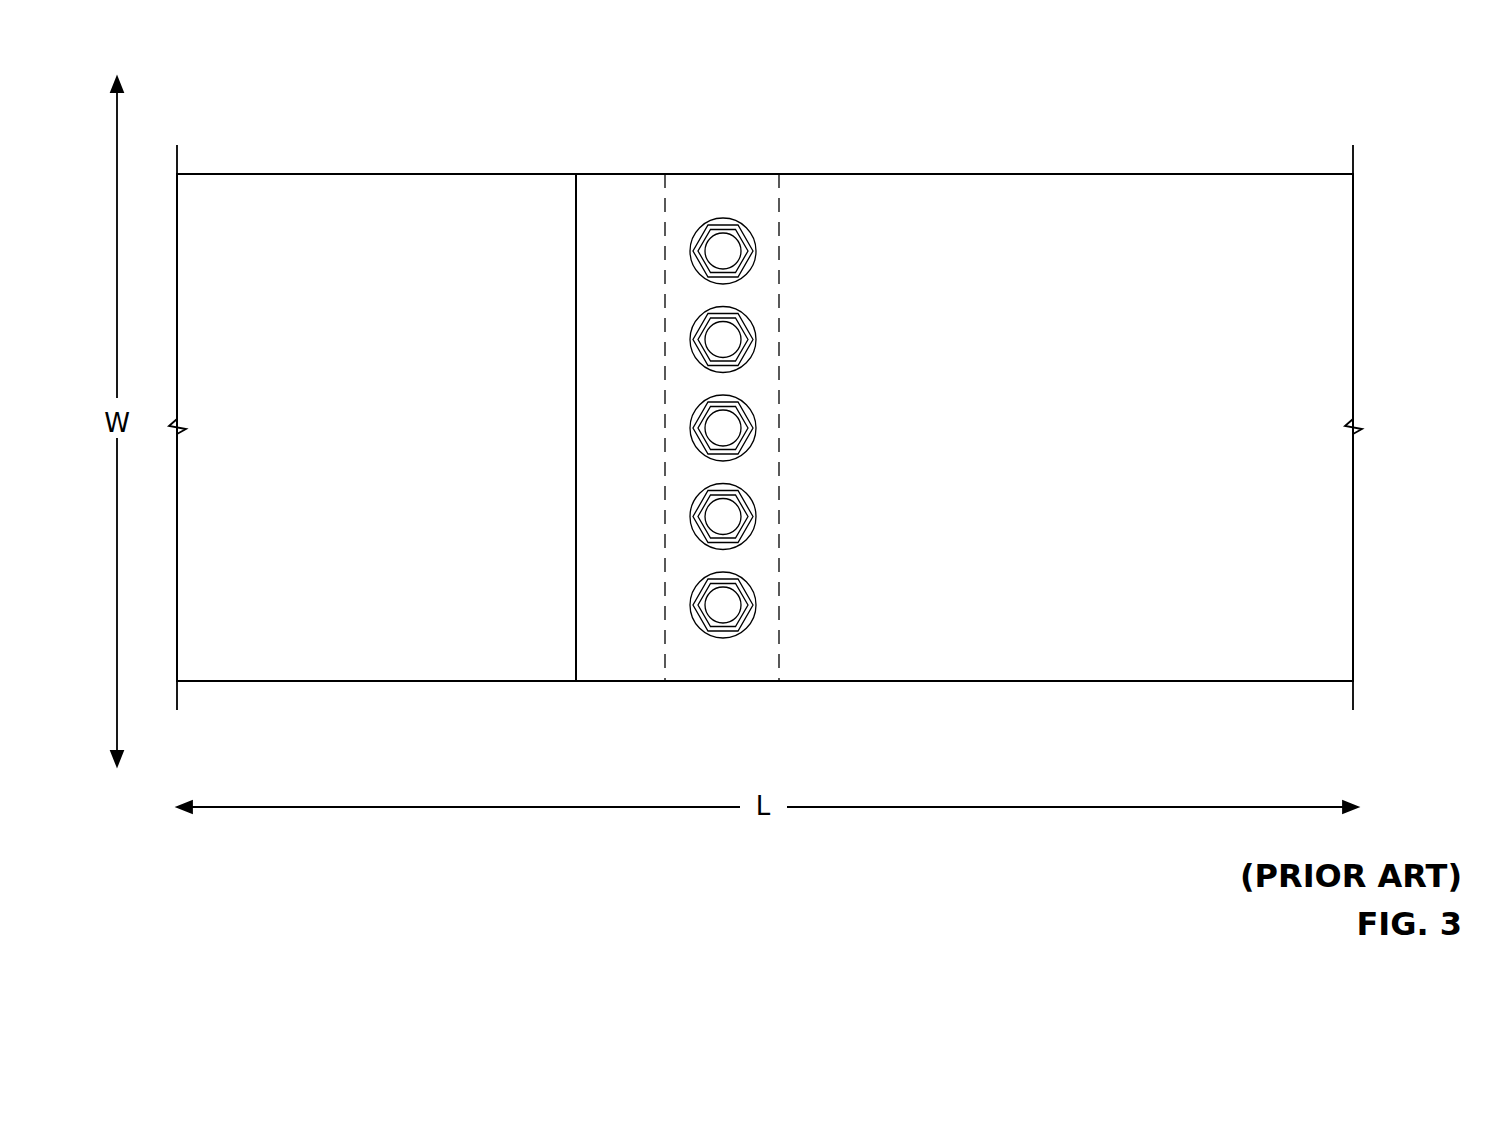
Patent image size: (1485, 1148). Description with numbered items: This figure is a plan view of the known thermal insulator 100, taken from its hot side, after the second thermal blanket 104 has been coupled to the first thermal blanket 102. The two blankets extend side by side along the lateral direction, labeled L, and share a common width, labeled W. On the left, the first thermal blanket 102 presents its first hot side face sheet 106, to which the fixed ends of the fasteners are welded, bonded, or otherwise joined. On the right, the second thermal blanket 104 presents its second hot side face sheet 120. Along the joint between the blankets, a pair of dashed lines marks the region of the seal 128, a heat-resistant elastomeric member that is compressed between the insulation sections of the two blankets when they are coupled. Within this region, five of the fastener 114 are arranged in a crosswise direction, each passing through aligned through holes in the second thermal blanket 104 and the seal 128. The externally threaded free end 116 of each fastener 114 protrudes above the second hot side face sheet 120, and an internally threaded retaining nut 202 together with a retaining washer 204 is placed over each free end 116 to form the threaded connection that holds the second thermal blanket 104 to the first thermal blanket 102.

The thermal insulator 100 is at (1100, 173).
The first thermal blanket 102 is at (271, 172).
The second thermal blanket 104 is at (1218, 173).
The first hot side face sheet 106 is at (375, 218).
The fastener 114 is at (690, 253).
The free end 116 is at (723, 251).
The second hot side face sheet 120 is at (1000, 222).
The seal 128 is at (783, 189).
The retaining nut 202 is at (701, 244).
The retaining washer 204 is at (750, 228).